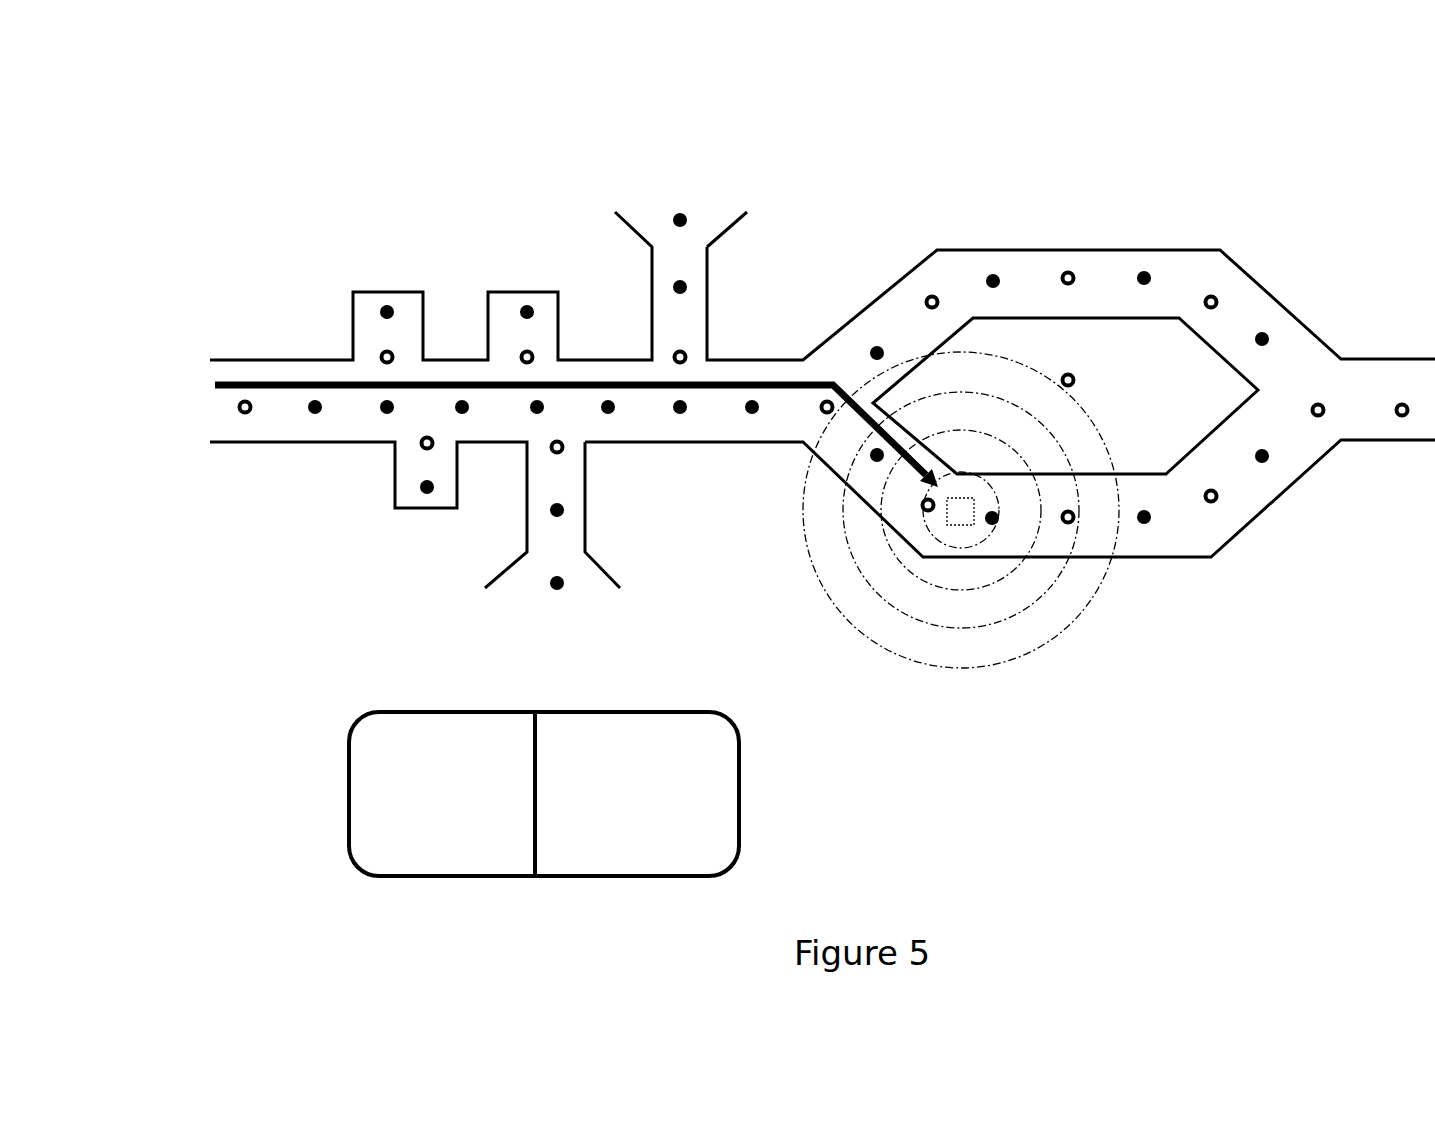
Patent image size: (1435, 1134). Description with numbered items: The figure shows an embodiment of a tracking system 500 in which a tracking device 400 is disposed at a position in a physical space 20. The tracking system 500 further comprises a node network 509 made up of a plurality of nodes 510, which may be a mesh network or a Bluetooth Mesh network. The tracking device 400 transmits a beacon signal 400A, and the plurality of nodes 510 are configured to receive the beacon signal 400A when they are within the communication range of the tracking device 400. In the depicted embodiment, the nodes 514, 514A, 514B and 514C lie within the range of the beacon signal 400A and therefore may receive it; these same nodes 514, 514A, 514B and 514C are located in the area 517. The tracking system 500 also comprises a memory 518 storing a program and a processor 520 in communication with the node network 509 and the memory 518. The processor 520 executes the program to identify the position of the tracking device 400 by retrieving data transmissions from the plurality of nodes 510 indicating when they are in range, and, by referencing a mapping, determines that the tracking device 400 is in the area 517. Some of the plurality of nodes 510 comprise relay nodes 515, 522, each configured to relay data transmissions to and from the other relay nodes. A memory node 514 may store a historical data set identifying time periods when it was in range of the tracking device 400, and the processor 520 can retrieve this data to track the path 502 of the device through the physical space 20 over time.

The tracking system 500 is at (470, 238).
The path 502 is at (303, 382).
The physical space 20 is at (1198, 248).
The relay node 522 is at (530, 352).
The plurality of nodes 510 is at (988, 280).
The node network 509 is at (1074, 260).
The relay node 515 is at (427, 457).
The tracking device 400 is at (965, 542).
The beacon signal 400A is at (855, 603).
The area 517 is at (978, 497).
The memory node 514 is at (920, 505).
The node 514A is at (870, 455).
The node 514B is at (1000, 520).
The node 514C is at (1075, 517).
The processor 520 is at (557, 590).
The memory 518 is at (637, 794).